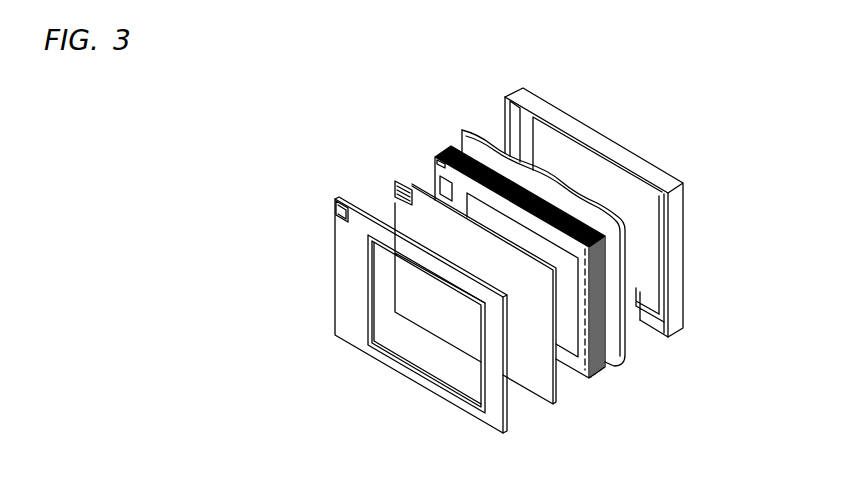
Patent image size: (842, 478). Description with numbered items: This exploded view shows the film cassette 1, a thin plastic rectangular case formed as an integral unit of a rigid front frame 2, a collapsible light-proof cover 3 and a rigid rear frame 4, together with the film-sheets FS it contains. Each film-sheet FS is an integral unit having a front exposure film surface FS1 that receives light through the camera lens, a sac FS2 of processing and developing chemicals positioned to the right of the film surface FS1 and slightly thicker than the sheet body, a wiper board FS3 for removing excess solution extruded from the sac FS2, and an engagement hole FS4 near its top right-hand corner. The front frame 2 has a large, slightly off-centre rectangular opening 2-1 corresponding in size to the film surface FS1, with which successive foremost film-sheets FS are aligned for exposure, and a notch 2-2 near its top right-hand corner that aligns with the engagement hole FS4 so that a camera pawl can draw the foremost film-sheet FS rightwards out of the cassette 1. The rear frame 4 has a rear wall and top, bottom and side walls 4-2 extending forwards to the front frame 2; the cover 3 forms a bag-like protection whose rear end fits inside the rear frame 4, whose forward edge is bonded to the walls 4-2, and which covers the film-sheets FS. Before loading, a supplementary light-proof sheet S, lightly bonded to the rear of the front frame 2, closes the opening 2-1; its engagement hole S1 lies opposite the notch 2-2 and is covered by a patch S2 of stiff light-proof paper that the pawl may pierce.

The cassette 1 is at (655, 355).
The front frame 2 is at (377, 315).
The rectangular opening 2-1 is at (415, 332).
The notch 2-2 is at (297, 213).
The supplementary light-proof sheet S is at (346, 209).
The engagement hole S1 is at (395, 194).
The patch S2 is at (403, 203).
The film-sheet FS is at (511, 254).
The exposure film surface FS1 is at (567, 272).
The sac FS2 is at (440, 185).
The wiper board FS3 is at (597, 348).
The engagement hole FS4 is at (435, 158).
The cover 3 is at (490, 142).
The rear frame 4 is at (631, 212).
The side walls 4-2 is at (708, 263).